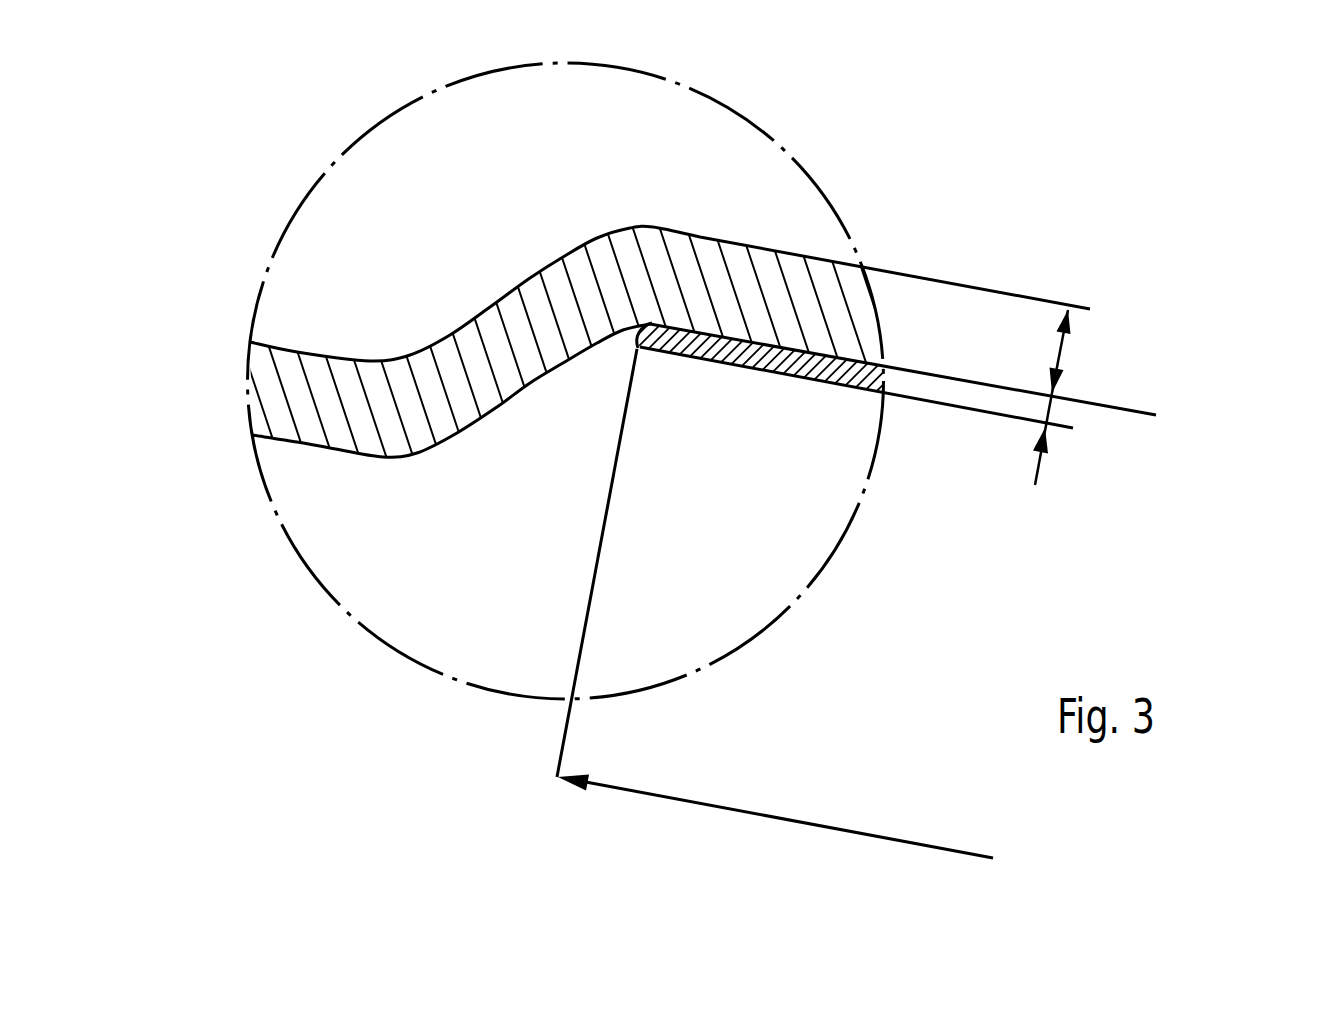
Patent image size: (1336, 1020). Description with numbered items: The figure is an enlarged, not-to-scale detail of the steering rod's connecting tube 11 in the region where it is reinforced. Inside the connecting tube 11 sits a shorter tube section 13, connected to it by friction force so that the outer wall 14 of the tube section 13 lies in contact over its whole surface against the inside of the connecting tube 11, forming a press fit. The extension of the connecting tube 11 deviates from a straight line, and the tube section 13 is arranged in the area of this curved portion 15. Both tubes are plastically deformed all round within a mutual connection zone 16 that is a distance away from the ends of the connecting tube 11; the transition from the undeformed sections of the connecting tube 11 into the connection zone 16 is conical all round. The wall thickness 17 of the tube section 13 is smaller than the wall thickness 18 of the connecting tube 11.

The connecting tube 11 is at (318, 372).
The tube section 13 is at (715, 347).
The outer wall 14 is at (1103, 402).
The curved portion 15 is at (1120, 437).
The connection zone 16 is at (620, 792).
The wall thickness 17 is at (1047, 411).
The wall thickness 18 is at (1060, 350).